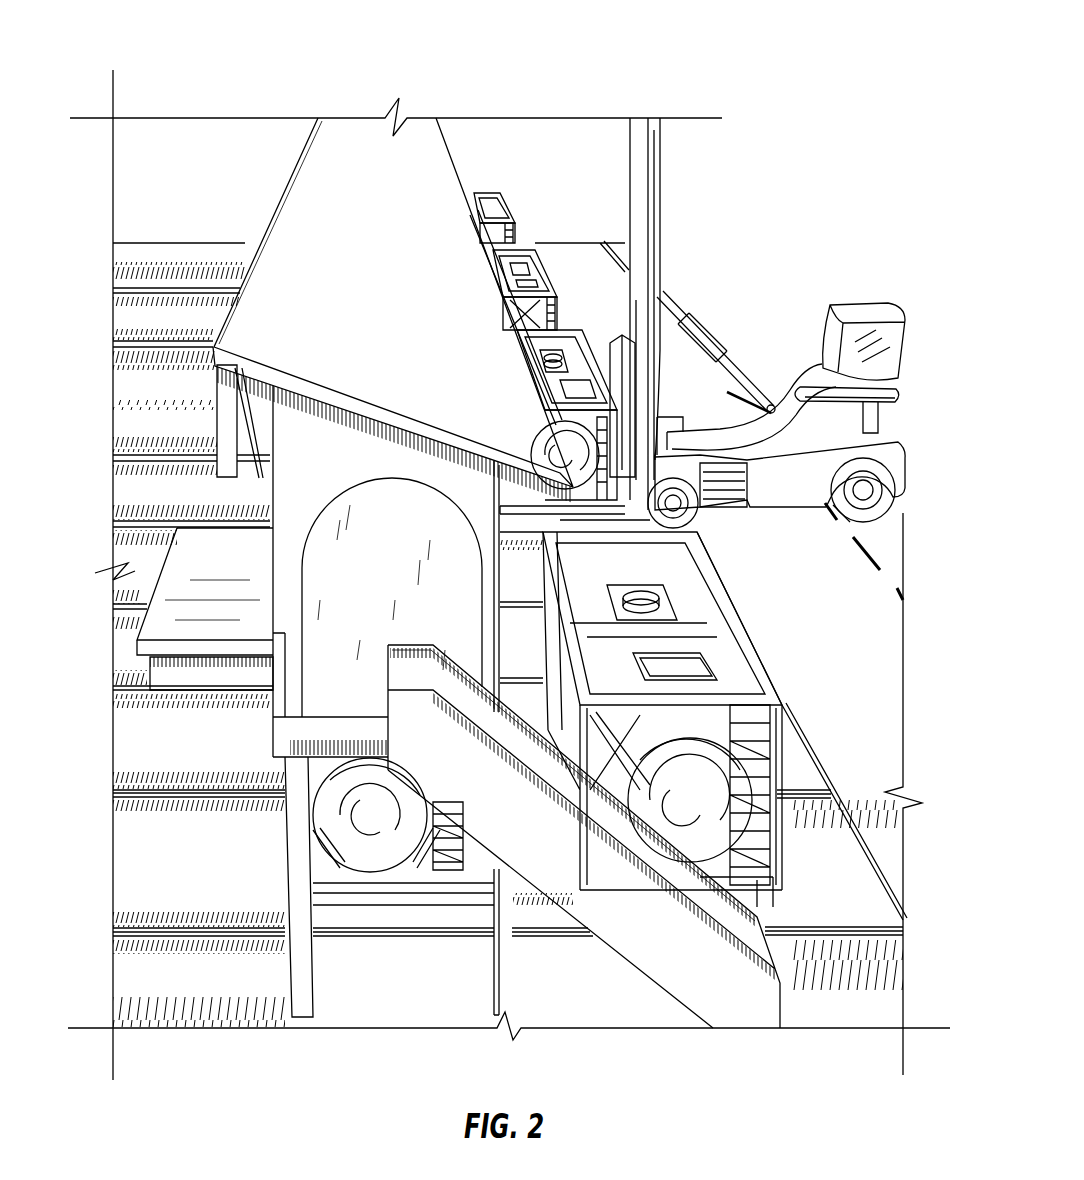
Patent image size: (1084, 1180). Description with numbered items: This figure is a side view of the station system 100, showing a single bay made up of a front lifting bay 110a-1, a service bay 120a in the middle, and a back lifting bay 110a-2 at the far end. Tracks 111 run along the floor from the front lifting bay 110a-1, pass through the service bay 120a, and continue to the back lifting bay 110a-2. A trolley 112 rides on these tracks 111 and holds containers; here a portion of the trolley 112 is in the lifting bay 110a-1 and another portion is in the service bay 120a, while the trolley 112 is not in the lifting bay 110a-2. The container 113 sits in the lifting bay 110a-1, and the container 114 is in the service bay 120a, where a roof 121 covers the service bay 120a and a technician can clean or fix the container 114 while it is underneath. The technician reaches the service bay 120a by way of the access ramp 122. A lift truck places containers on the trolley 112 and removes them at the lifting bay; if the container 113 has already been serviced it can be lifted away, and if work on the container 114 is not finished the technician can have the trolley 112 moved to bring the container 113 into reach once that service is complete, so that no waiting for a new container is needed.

The station system 100 is at (149, 57).
The roof 121 is at (272, 268).
The service bay 120a is at (372, 640).
The trolley 112 is at (181, 588).
The container 113 is at (755, 672).
The container 114 is at (877, 295).
The tracks 111 is at (138, 790).
The access ramp 122 is at (762, 965).
The lifting bay 110a-1 is at (849, 875).
The lifting bay 110a-2 is at (219, 746).